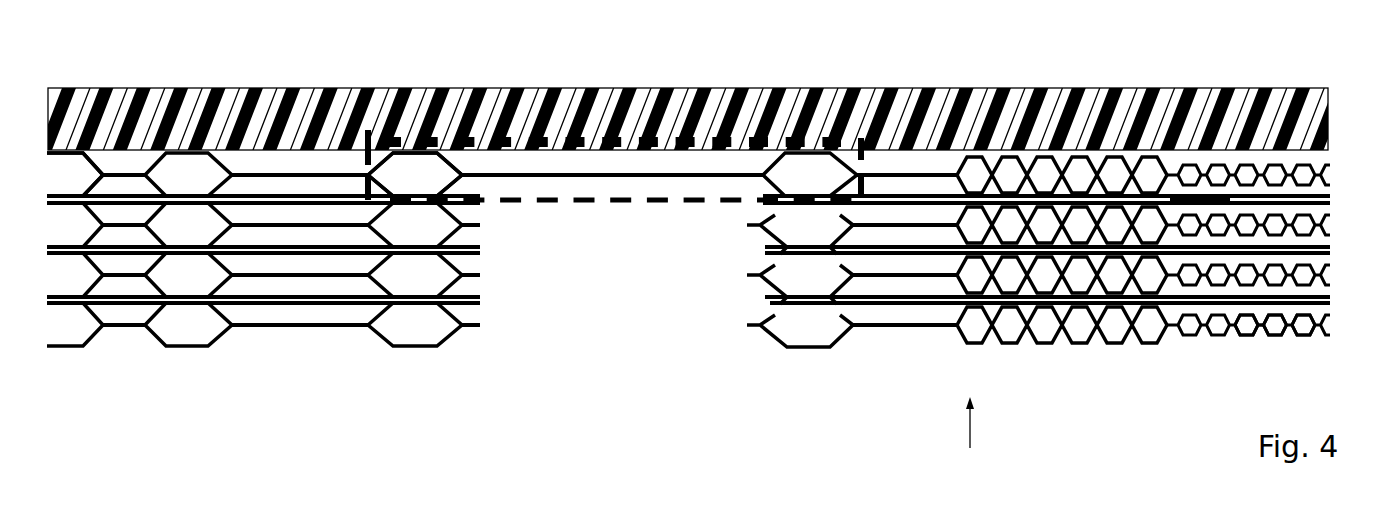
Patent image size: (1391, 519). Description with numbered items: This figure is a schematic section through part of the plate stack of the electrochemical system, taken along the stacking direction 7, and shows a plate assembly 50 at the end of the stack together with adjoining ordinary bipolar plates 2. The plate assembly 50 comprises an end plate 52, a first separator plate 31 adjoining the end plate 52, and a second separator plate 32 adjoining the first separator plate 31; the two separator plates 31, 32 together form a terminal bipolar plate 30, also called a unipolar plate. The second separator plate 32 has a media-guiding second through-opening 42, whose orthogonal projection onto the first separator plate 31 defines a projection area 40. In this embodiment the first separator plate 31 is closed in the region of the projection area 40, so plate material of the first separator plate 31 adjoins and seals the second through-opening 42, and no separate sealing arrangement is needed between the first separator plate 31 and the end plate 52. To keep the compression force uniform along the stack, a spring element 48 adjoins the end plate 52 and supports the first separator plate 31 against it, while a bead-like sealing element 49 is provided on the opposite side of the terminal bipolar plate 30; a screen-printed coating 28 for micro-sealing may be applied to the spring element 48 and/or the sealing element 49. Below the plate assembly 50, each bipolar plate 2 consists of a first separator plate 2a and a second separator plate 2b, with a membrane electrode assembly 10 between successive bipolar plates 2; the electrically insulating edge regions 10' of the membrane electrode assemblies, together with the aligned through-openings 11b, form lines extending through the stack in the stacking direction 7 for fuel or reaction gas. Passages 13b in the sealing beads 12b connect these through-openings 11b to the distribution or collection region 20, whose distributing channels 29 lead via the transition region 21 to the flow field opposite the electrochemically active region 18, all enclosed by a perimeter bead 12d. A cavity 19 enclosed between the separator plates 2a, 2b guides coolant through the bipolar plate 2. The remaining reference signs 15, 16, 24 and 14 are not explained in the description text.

The plate assembly 50 is at (75, 60).
The end plate 52 is at (645, 107).
The coating 28 is at (412, 150).
The spring element 48 is at (433, 150).
The projection area 40 is at (678, 175).
The terminal bipolar plate 30 is at (302, 173).
The first separator plate 31 is at (58, 155).
The second separator plate 32 is at (52, 196).
The second through-opening 42 is at (485, 177).
The sealing element 49 is at (453, 177).
The strut 15 is at (302, 302).
The perimeter bead 12d is at (197, 347).
The sealing bead 12b is at (418, 347).
The first separator plate 2a is at (768, 270).
The second separator plate 2b is at (818, 347).
The electrically insulating edge region 10' is at (822, 288).
The passage 13b is at (782, 312).
The through-opening 11b is at (633, 312).
The distribution or collection region 20 is at (1020, 348).
The transition region 21 is at (1195, 347).
The support strip 16 is at (1180, 310).
The cavity 19 is at (1243, 335).
The connecting web 24 is at (1258, 327).
The distributing channel 29 is at (1282, 333).
The active region 18 is at (1300, 349).
The support strip 14 is at (1318, 303).
The bipolar plate 2 is at (1326, 218).
The MEA 10 is at (1351, 303).
The stacking direction 7 is at (970, 415).